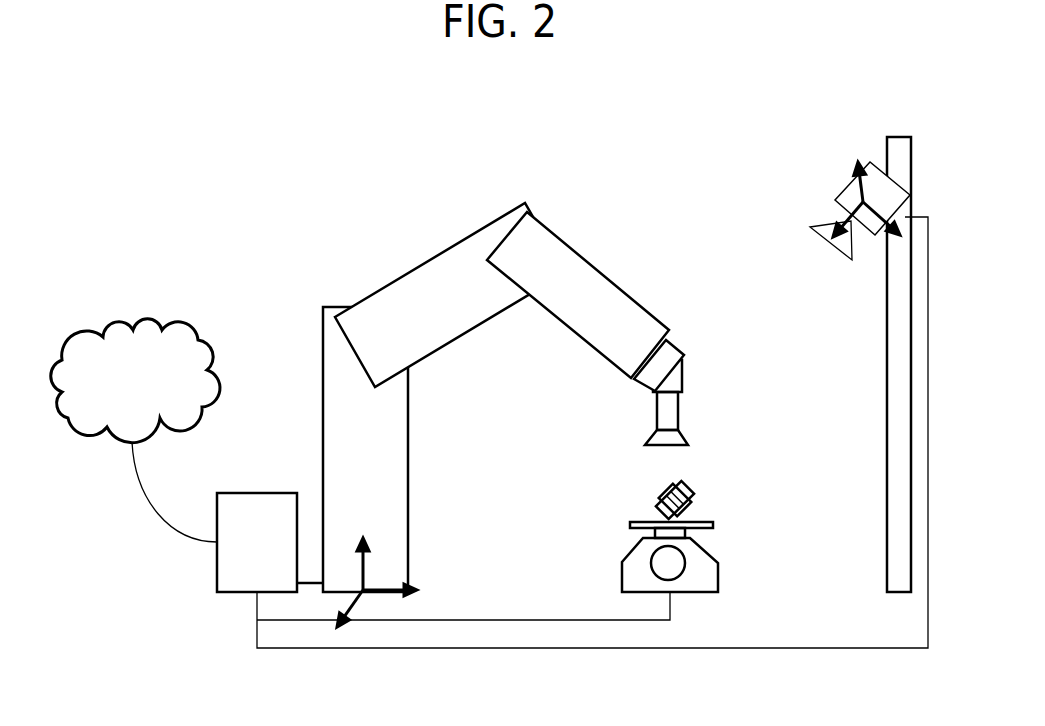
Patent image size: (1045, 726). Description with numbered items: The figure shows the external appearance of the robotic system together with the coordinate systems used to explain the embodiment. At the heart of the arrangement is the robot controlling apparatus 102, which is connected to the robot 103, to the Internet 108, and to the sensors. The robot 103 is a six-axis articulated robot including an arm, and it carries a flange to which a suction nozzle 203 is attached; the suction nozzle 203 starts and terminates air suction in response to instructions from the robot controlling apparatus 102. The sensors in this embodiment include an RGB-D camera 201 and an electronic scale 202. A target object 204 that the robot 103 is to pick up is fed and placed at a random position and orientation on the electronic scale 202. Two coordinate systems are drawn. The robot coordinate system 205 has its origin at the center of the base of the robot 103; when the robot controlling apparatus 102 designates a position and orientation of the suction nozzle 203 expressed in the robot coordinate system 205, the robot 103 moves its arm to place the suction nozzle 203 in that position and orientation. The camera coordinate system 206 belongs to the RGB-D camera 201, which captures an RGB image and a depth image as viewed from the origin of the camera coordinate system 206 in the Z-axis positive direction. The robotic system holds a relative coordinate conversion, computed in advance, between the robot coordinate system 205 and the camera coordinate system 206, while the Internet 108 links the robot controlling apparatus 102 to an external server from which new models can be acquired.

The robot controlling apparatus 102 is at (230, 593).
The robot 103 is at (380, 287).
The Internet 108 is at (135, 320).
The RGB-D camera 201 is at (852, 263).
The electronic scale 202 is at (722, 592).
The suction nozzle 203 is at (682, 417).
The target object 204 is at (697, 495).
The robot coordinate system 205 is at (363, 570).
The camera coordinate system 206 is at (857, 165).